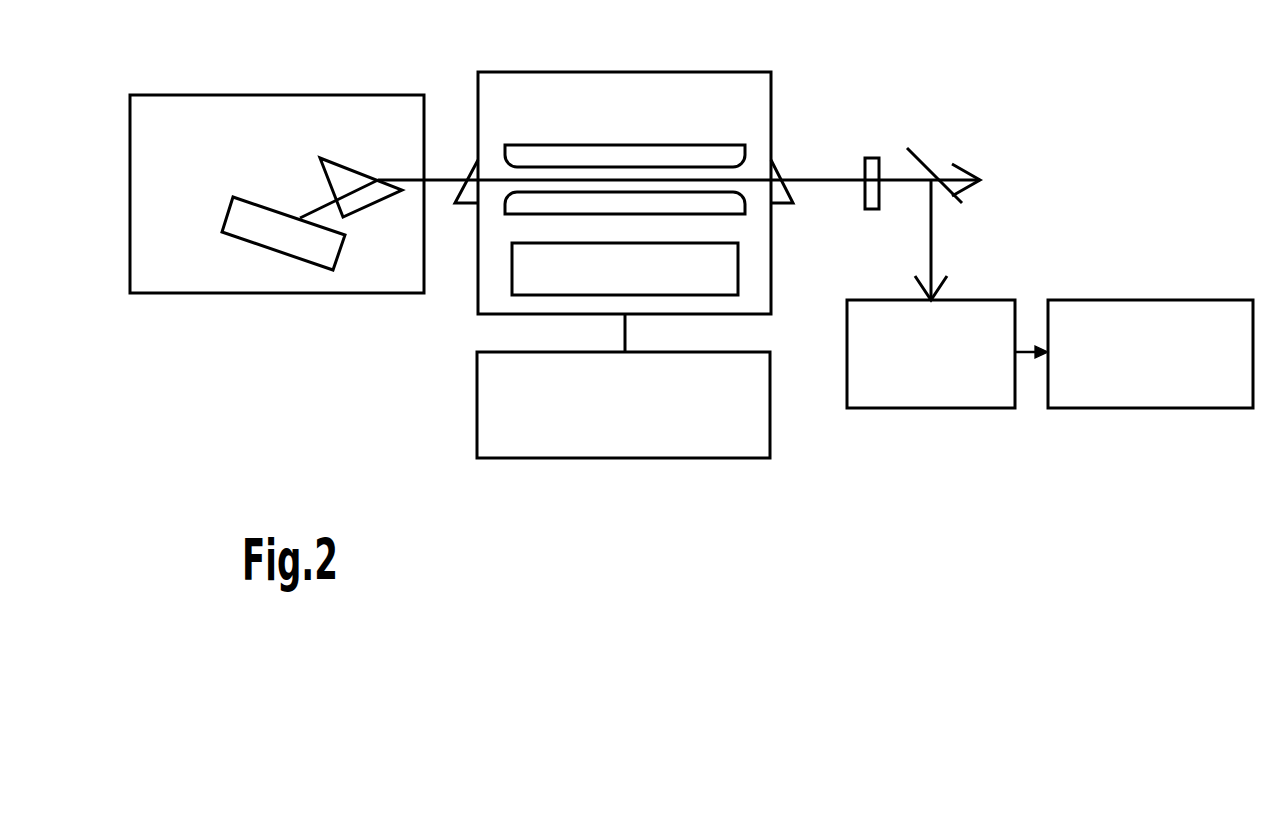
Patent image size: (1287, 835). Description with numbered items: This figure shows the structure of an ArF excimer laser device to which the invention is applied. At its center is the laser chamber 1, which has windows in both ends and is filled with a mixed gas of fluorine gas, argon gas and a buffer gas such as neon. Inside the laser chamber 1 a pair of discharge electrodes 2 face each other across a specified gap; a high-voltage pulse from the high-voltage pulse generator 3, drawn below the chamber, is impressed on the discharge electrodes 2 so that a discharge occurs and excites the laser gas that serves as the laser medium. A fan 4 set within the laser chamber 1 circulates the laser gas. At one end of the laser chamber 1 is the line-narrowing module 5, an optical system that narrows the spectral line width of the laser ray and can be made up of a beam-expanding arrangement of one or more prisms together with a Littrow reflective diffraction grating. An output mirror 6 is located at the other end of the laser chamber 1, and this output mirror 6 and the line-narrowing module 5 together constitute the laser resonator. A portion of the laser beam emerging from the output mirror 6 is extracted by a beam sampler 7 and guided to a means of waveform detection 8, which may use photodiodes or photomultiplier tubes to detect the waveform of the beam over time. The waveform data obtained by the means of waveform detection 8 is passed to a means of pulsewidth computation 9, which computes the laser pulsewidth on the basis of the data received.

The laser chamber 1 is at (524, 72).
The discharge electrodes 2 is at (737, 198).
The high-voltage pulse generator 3 is at (520, 461).
The fan 4 is at (512, 290).
The line-narrowing module 5 is at (178, 95).
The output mirror 6 is at (872, 157).
The beam sampler 7 is at (934, 177).
The means of waveform detection 8 is at (890, 410).
The means of pulsewidth computation 9 is at (1092, 410).